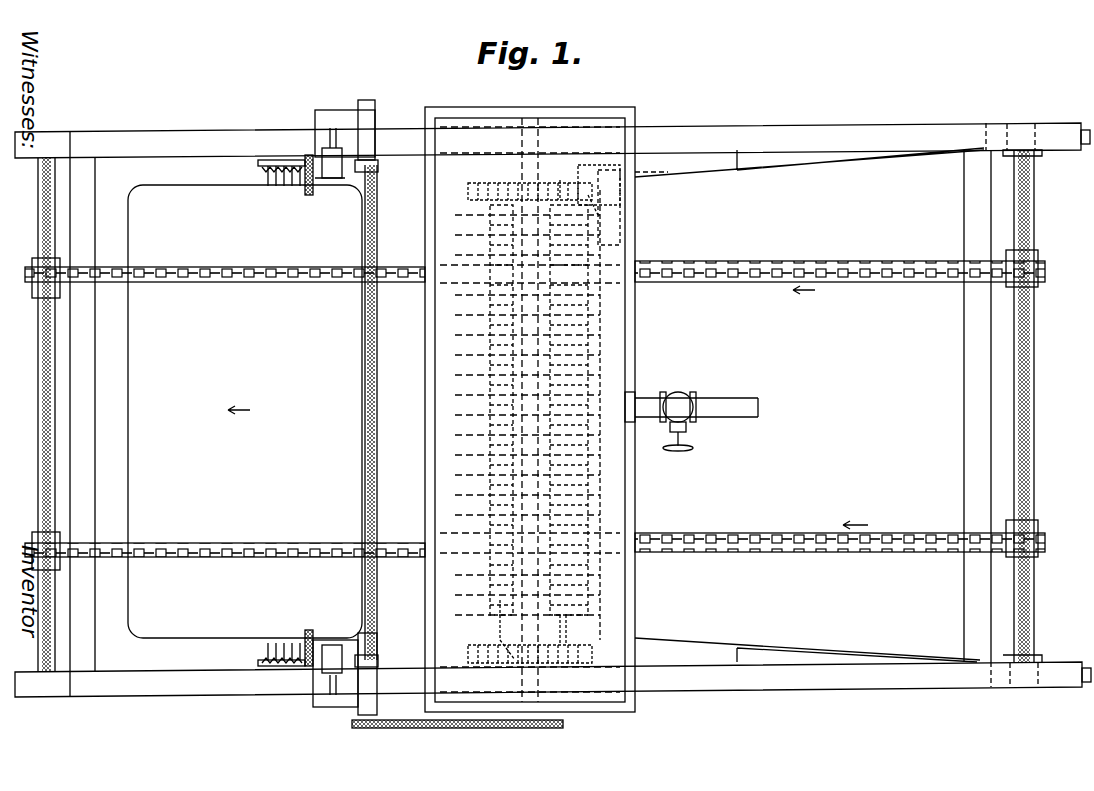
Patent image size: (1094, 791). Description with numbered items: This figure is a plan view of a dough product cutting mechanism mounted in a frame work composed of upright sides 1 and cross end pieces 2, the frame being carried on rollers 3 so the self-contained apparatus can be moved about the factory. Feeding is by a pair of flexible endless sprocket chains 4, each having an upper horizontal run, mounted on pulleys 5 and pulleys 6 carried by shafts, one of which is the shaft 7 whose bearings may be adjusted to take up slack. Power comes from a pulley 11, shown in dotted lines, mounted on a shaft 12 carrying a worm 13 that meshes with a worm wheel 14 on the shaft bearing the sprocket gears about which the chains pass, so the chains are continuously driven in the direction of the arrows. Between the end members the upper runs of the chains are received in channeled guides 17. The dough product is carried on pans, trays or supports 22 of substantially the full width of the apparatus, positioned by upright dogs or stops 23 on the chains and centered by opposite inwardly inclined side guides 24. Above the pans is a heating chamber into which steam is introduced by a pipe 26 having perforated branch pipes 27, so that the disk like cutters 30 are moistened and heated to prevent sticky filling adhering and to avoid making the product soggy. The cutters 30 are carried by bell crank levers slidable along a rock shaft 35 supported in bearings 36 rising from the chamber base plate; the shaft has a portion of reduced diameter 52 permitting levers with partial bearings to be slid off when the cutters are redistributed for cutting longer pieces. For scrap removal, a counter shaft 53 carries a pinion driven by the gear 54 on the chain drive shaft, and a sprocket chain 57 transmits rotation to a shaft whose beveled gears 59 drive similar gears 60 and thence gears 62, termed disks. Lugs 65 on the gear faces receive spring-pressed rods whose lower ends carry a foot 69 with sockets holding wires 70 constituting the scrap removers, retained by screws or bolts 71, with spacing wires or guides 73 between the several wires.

The upright sides 1 is at (202, 145).
The cross end pieces 2 is at (88, 428).
The rollers 3 is at (40, 380).
The sprocket chains 4 is at (797, 270).
The pulleys 5 is at (1036, 256).
The pulleys 6 is at (35, 264).
The shaft 7 is at (1032, 378).
The pulley 11 is at (635, 178).
The shaft 12 is at (622, 208).
The worm 13 is at (540, 180).
The worm wheel 14 is at (618, 236).
The channeled guides 17 is at (900, 262).
The pans, trays or supports 22 is at (194, 195).
The upright dogs or stops 23 is at (385, 274).
The inwardly inclined side guides 24 is at (742, 178).
The pipe 26 is at (725, 400).
The branch pipes 27 is at (610, 333).
The disk like cutters 30 is at (472, 218).
The rock shaft 35 is at (622, 361).
The bearings 36 is at (588, 165).
The portion of reduced diameter 52 is at (572, 629).
The counter shaft 53 is at (505, 670).
The gear 54 is at (491, 620).
The sprocket chain 57 is at (470, 730).
The beveled gears 59 is at (379, 166).
The gears 60 is at (378, 185).
The gears 62 is at (316, 148).
The lugs 65 is at (315, 148).
The foot 69 is at (278, 176).
The wires 70 is at (268, 176).
The screws or bolts 71 is at (265, 160).
The spacing wires or guides 73 is at (305, 188).